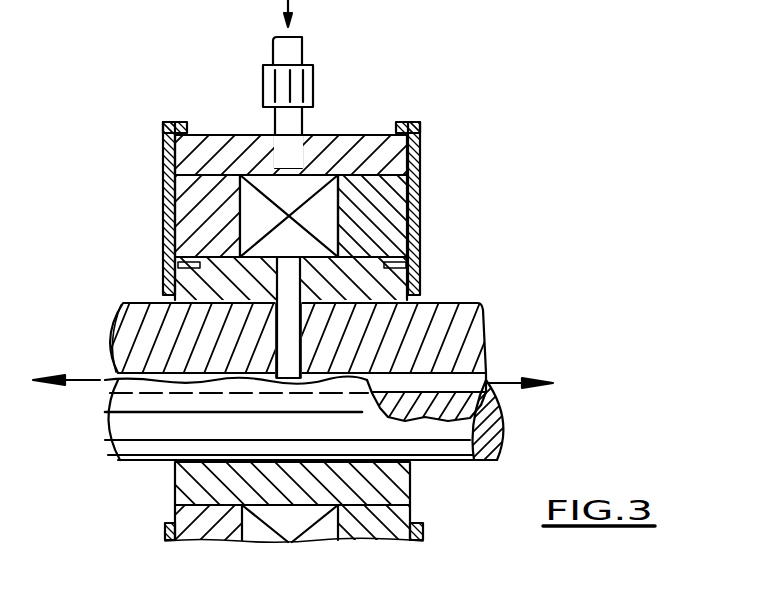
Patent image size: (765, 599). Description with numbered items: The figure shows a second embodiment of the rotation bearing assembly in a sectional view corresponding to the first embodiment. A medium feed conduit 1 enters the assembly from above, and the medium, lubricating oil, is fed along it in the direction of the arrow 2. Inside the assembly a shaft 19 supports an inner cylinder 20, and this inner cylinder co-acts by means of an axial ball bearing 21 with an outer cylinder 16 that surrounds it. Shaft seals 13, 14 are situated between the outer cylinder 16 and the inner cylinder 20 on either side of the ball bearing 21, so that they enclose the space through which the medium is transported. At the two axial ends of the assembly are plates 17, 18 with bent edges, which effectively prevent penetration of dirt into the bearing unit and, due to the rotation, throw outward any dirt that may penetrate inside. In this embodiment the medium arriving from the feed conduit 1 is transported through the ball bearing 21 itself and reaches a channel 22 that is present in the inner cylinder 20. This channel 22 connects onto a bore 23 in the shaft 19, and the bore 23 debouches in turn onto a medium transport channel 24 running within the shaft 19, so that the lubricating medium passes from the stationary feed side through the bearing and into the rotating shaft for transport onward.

The medium feed conduit 1 is at (302, 46).
The arrow 2 is at (292, 8).
The shaft seal 13 is at (192, 217).
The shaft seal 14 is at (378, 210).
The outer cylinder 16 is at (379, 140).
The plate with bent edges 17 is at (163, 152).
The plate with bent edges 18 is at (420, 142).
The shaft 19 is at (433, 331).
The inner cylinder 20 is at (367, 293).
The axial ball bearing 21 is at (300, 195).
The channel 22 is at (290, 272).
The bore 23 is at (285, 338).
The medium transport channel 24 is at (430, 388).